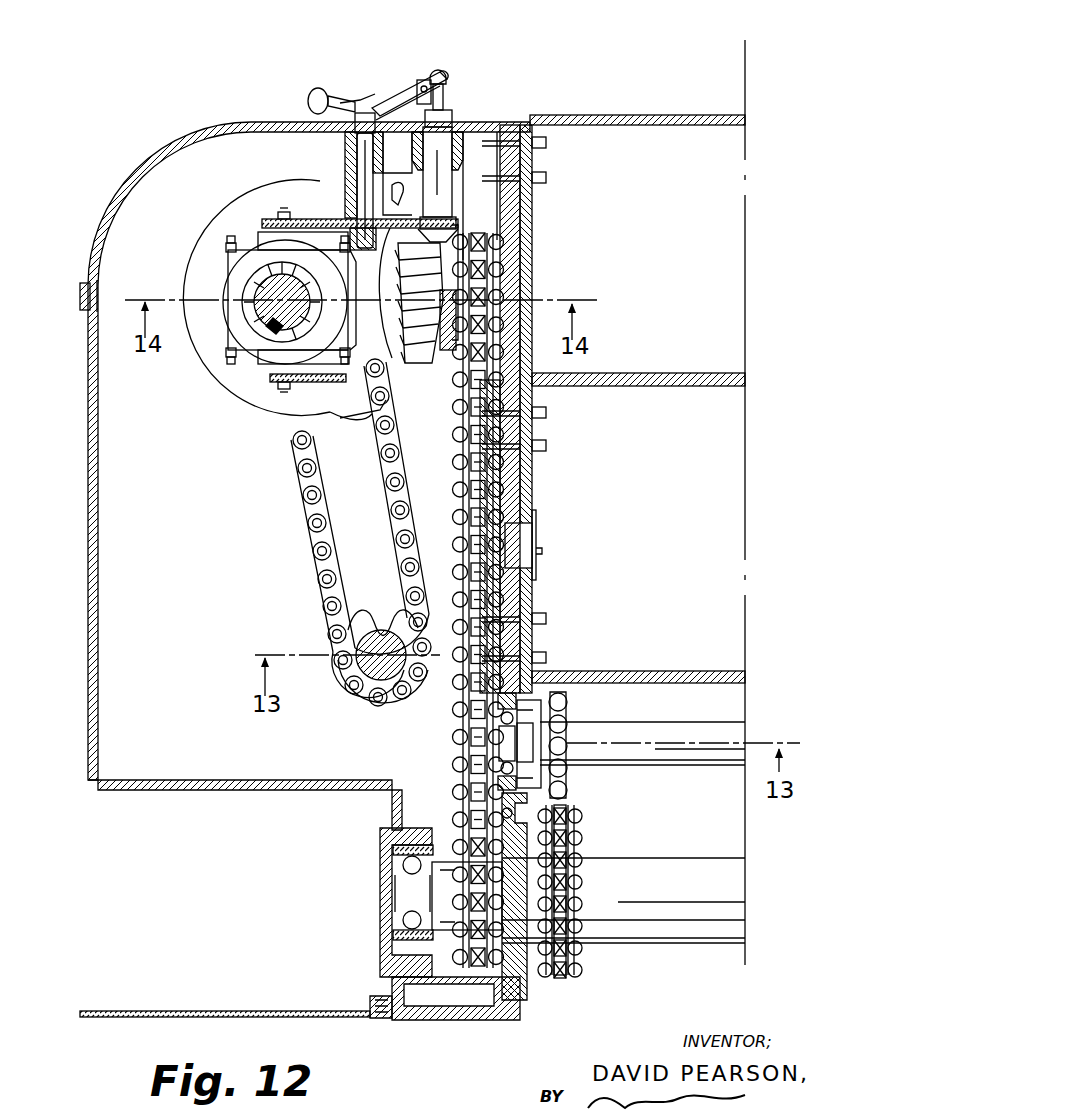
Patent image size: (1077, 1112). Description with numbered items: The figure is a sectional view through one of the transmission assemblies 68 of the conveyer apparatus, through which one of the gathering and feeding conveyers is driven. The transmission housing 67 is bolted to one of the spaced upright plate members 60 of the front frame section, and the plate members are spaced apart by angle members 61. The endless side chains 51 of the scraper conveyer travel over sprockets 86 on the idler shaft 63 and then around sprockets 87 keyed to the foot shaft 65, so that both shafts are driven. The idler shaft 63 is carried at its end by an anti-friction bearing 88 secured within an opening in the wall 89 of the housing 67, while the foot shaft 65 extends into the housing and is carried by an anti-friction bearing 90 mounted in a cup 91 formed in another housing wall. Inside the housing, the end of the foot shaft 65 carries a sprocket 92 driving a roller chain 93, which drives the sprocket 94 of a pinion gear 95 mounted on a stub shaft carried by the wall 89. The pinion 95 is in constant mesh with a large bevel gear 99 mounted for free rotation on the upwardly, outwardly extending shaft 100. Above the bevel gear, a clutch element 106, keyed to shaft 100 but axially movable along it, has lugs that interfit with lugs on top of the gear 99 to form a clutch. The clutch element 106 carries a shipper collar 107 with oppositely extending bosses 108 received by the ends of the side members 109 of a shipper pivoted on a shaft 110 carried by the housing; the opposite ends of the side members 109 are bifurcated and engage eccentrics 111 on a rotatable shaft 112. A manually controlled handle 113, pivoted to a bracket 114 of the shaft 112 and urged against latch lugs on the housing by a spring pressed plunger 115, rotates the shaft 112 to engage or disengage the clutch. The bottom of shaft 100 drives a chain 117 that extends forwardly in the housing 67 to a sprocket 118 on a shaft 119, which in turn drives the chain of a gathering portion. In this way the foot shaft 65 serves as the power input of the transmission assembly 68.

The transmission assembly 68 is at (229, 123).
The upright plate member 60 is at (530, 273).
The transmission housing 67 is at (493, 122).
The angle member 61 is at (661, 116).
The bevel gear 99 is at (206, 350).
The shaft 100 is at (266, 295).
The clutch element 106 is at (256, 255).
The shipper collar 107 is at (226, 262).
The boss 108 is at (284, 212).
The side member 109 is at (318, 220).
The shaft 110 is at (370, 180).
The eccentric 111 is at (452, 210).
The rotatable shaft 112 is at (440, 173).
The handle 113 is at (388, 108).
The bracket 114 is at (414, 94).
The spring pressed plunger 115 is at (444, 108).
The sprocket 94 is at (478, 234).
The pinion gear 95 is at (414, 368).
The roller chain 93 is at (458, 723).
The chain 117 is at (312, 500).
The sprocket 118 is at (373, 612).
The shaft 119 is at (360, 690).
The sprocket 86 is at (566, 710).
The idler shaft 63 is at (631, 744).
The anti-friction bearing 88 is at (503, 768).
The wall 89 is at (502, 785).
The foot shaft 65 is at (623, 900).
The side chain 51 is at (575, 838).
The sprocket 87 is at (566, 870).
The sprocket 92 is at (468, 886).
The cup 91 is at (396, 820).
The anti-friction bearing 90 is at (393, 849).